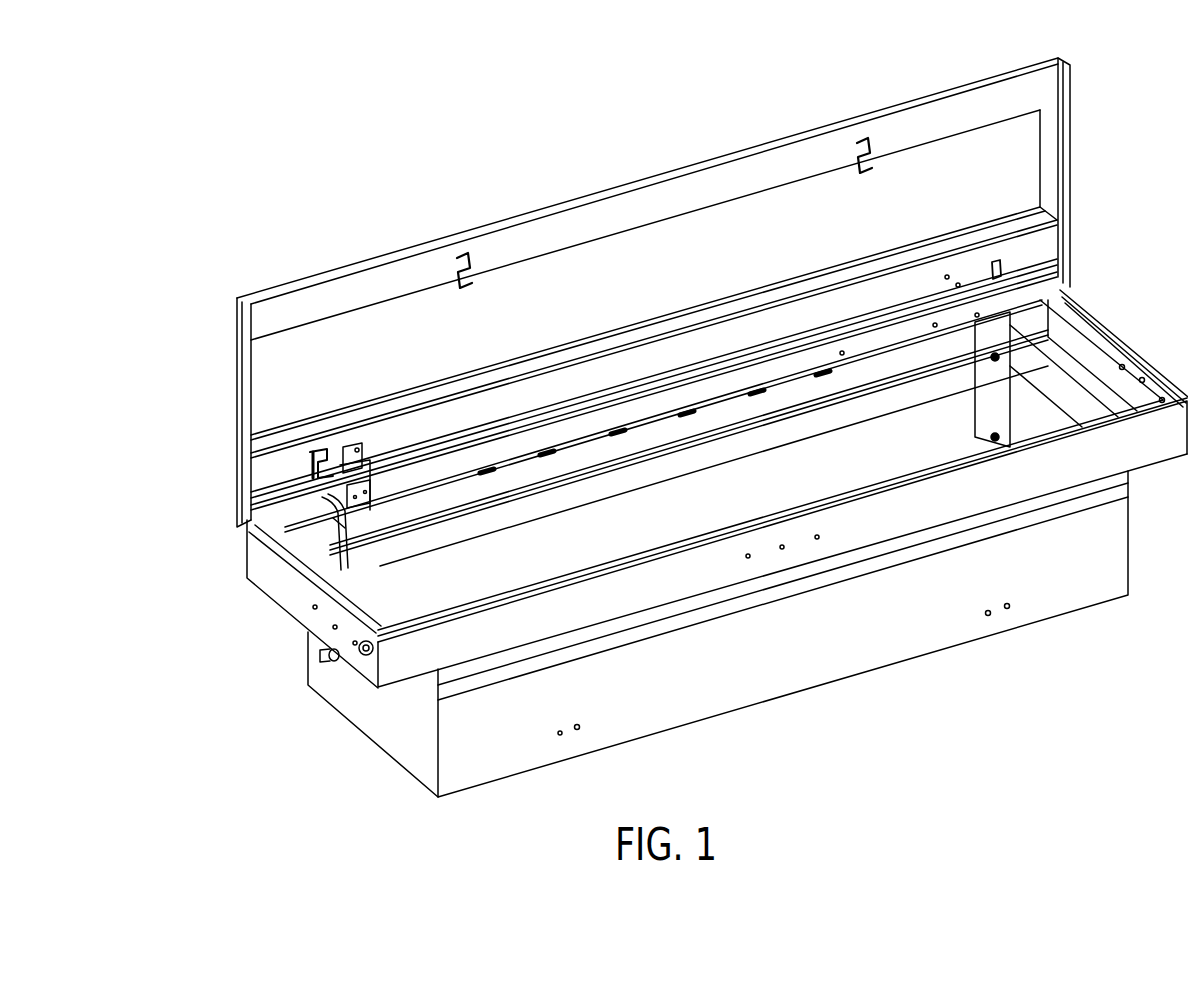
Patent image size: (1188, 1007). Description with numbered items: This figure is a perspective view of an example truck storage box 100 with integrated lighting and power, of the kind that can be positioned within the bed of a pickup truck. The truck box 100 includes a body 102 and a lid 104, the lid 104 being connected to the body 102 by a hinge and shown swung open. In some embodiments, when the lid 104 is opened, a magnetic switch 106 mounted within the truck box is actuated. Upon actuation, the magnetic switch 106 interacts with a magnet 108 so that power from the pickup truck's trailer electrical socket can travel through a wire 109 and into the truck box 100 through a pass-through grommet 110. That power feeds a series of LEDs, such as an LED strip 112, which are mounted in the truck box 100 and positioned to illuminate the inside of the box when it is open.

The truck storage box 100 is at (1112, 113).
The body 102 is at (747, 713).
The lid 104 is at (688, 163).
The magnetic switch 106 is at (322, 531).
The magnet 108 is at (339, 463).
The wire 109 is at (333, 518).
The pass-through grommet 110 is at (317, 647).
The LED strip 112 is at (652, 408).